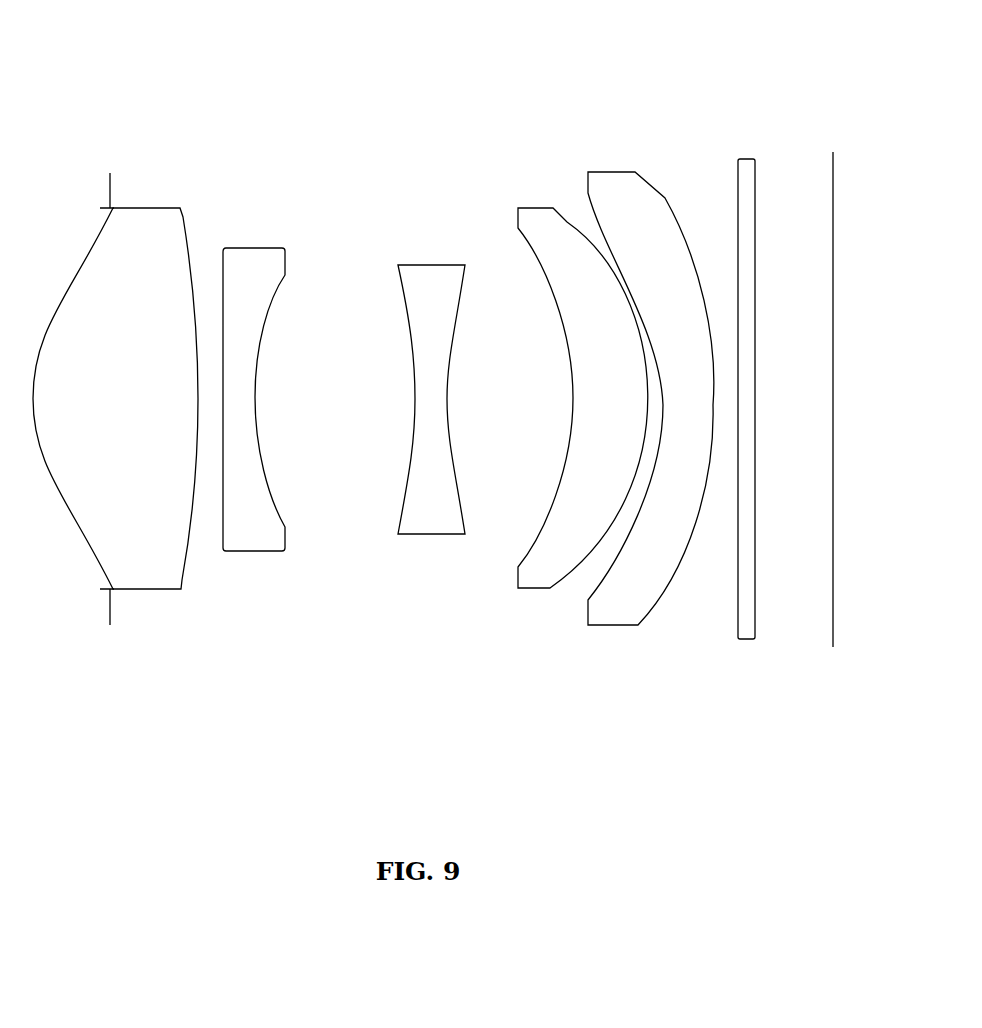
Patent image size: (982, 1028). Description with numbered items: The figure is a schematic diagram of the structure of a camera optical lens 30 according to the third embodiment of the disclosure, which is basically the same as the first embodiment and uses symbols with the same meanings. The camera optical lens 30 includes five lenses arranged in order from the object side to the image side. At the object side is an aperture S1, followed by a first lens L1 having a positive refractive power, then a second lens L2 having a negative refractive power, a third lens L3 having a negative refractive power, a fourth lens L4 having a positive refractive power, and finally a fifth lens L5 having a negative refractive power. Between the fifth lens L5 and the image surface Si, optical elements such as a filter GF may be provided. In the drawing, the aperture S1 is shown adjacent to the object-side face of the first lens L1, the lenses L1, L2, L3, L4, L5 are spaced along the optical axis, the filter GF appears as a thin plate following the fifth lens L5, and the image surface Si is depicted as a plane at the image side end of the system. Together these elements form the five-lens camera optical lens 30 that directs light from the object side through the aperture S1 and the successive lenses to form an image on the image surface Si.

The camera optical lens 30 is at (422, 52).
The aperture S1 is at (107, 388).
The first lens L1 is at (115, 384).
The second lens L2 is at (254, 385).
The third lens L3 is at (431, 384).
The fourth lens L4 is at (583, 383).
The fifth lens L5 is at (651, 384).
The filter GF is at (747, 385).
The image surface Si is at (833, 388).